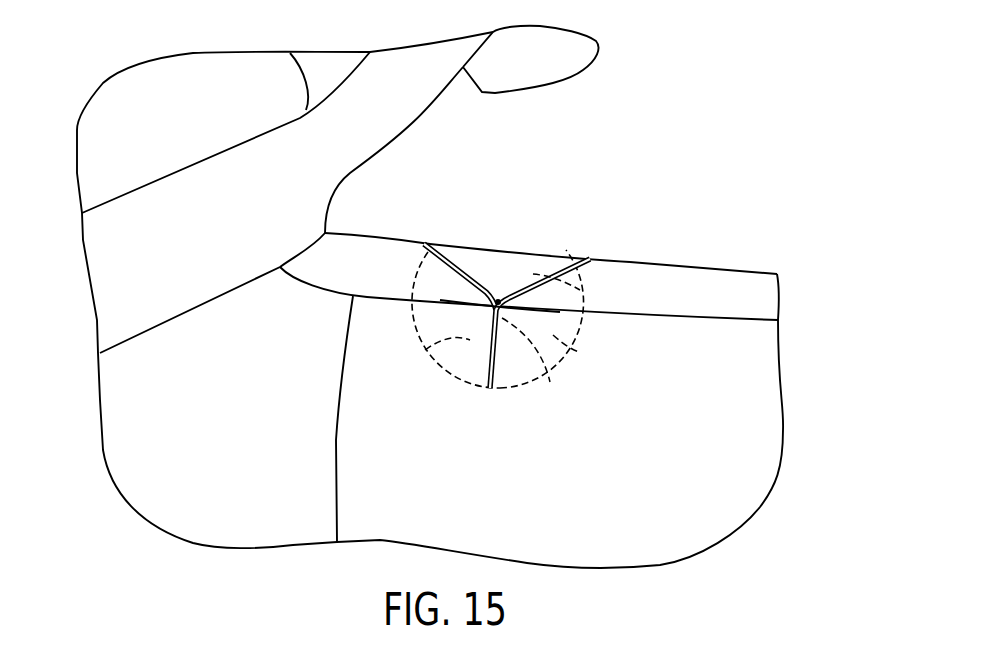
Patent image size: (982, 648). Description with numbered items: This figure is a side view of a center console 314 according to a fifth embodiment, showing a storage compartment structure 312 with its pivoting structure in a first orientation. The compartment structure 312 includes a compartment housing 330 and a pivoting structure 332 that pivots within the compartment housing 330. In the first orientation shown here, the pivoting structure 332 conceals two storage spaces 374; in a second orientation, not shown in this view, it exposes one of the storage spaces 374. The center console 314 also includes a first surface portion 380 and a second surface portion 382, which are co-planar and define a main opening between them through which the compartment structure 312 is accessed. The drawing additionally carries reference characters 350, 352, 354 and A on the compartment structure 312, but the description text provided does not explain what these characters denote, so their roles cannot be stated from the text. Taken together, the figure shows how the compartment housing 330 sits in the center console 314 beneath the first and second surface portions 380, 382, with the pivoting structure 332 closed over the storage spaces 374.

The center console 314 is at (702, 262).
The first surface portion 380 is at (380, 235).
The second surface portion 382 is at (637, 262).
The compartment structure 312 is at (507, 320).
The slit arm 350 is at (528, 283).
The slit arm 352 is at (512, 388).
The slit arm 354 is at (452, 265).
The compartment housing 330 is at (456, 386).
The pivoting structure 332 is at (533, 274).
The storage spaces 374 is at (580, 352).
The flap A is at (550, 382).